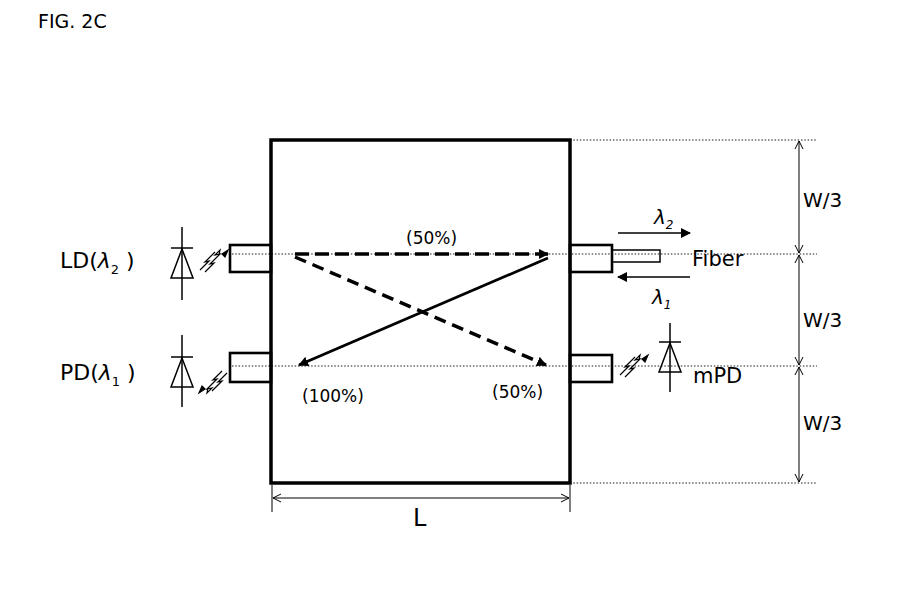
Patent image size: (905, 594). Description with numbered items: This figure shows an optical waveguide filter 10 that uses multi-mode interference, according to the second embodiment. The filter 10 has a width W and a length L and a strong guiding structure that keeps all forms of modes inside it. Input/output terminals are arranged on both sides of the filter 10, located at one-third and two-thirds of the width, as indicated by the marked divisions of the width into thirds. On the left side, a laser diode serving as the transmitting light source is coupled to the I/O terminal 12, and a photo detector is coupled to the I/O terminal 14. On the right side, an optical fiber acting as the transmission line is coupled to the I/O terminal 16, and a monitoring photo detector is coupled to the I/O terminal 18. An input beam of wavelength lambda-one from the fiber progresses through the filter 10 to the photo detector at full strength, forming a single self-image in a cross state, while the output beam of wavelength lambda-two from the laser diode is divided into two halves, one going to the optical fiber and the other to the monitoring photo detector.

The optical waveguide filter 10 is at (454, 102).
The I/O terminal 12 is at (243, 250).
The I/O terminal 14 is at (251, 374).
The I/O terminal 16 is at (592, 250).
The I/O terminal 18 is at (597, 372).